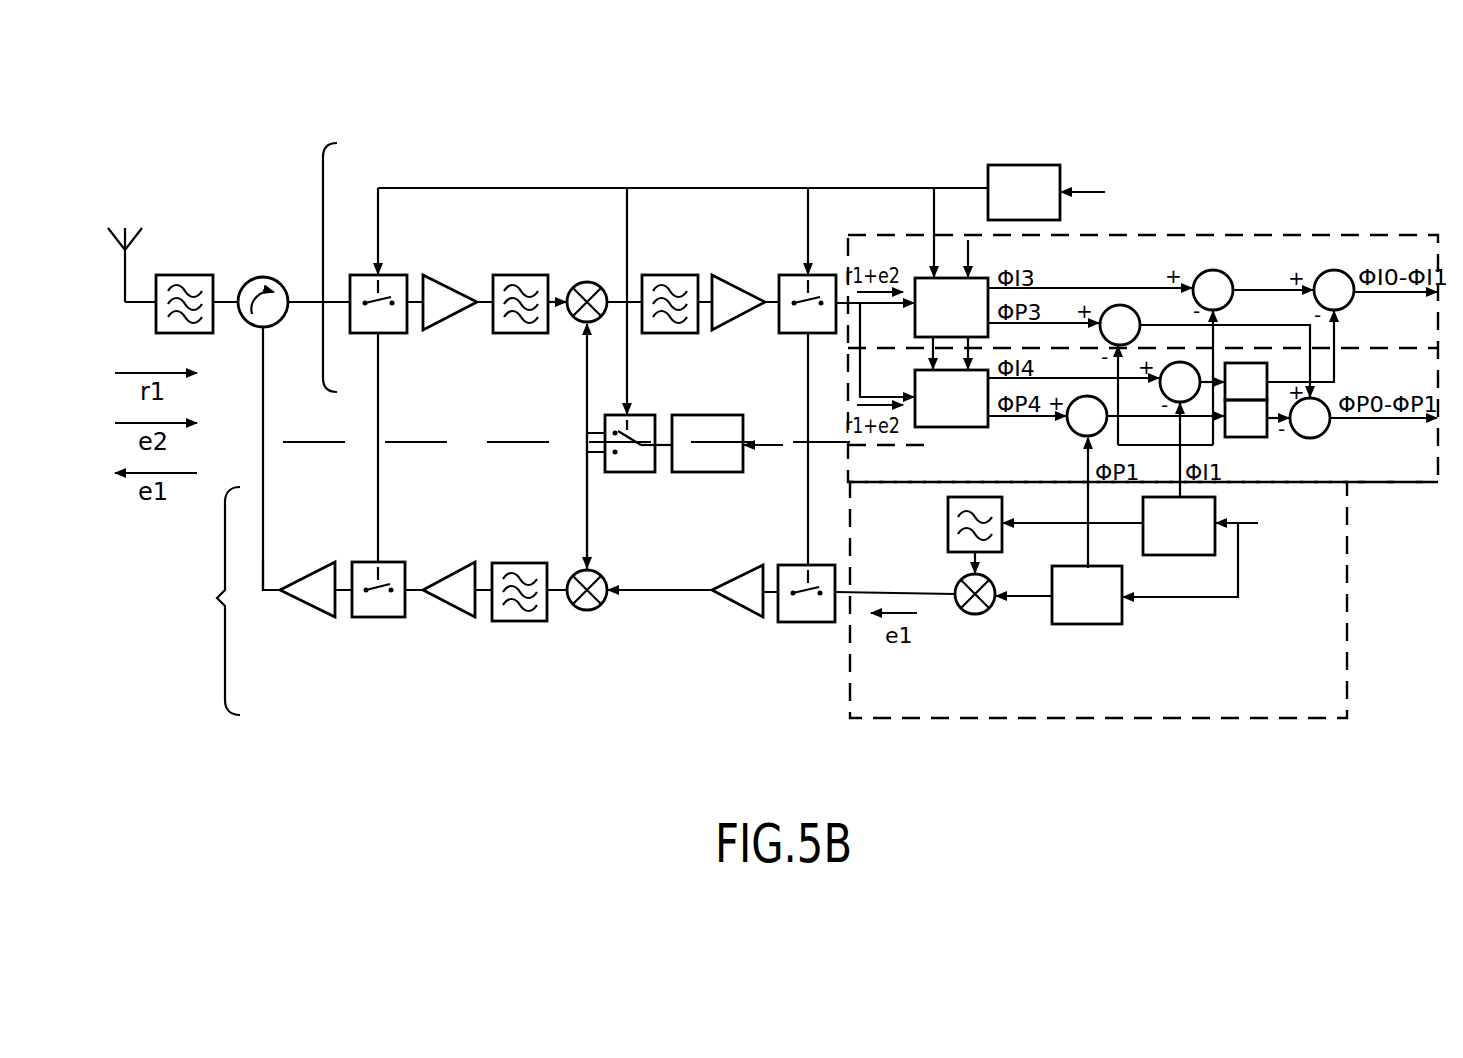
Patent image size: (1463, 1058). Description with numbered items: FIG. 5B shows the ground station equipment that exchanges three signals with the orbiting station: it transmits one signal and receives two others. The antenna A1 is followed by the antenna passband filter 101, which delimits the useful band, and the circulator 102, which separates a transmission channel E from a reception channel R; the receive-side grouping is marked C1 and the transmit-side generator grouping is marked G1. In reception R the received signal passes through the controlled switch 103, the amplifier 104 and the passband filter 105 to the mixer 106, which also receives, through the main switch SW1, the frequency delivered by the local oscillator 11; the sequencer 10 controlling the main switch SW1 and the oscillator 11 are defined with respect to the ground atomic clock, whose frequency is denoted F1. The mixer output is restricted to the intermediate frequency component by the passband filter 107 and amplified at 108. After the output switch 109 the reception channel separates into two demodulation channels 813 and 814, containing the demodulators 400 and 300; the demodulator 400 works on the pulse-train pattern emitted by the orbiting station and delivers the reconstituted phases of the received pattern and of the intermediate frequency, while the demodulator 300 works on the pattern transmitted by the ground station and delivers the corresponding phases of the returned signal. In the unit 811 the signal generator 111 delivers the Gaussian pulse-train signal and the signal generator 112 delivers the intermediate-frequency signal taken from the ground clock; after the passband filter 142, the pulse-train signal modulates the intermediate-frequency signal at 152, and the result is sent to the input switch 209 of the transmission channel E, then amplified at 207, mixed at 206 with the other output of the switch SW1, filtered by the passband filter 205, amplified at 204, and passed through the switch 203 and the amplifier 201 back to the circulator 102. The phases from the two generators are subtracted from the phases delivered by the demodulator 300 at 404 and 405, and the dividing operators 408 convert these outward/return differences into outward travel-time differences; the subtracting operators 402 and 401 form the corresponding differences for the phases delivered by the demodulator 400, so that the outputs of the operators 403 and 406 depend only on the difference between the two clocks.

The antenna A1 is at (137, 227).
The antenna passband filter 101 is at (192, 275).
The circulator 102 is at (256, 278).
The receive chain C1 is at (313, 275).
The reception channel R is at (302, 305).
The controlled switch 103 is at (358, 275).
The amplifier 104 is at (447, 275).
The passband filter 105 is at (511, 275).
The mixer 106 is at (584, 281).
The passband filter 107 is at (674, 275).
The amplifier 108 is at (733, 275).
The output switch 109 is at (792, 335).
The transmission/reception sequencer 10 is at (1033, 165).
The frequency of the clock on the ground F1 is at (1008, 342).
The demodulator 400 is at (922, 277).
The demodulator 300 is at (955, 428).
The subtracting operator 401 is at (1117, 303).
The subtracting operator 402 is at (1213, 270).
The operator 403 is at (1334, 270).
The subtracting operator 404 is at (1168, 398).
The subtracting operator 405 is at (1073, 432).
The operator 406 is at (1318, 438).
The dividing operator 408 is at (1250, 438).
The demodulation channel 813 is at (1404, 234).
The demodulation channel 814 is at (1382, 484).
The modulator unit 811 is at (1195, 720).
The passband filter 142 is at (948, 522).
The signal generator 111 is at (1143, 522).
The modulator 152 is at (975, 615).
The signal generator 112 is at (1090, 625).
The main switch SW1 is at (630, 474).
The local oscillator 11 is at (715, 474).
The amplifier 201 is at (312, 572).
The switch 203 is at (375, 619).
The amplifier 204 is at (449, 570).
The passband filter 205 is at (530, 564).
The mixer 206 is at (587, 611).
The amplifier 207 is at (737, 612).
The input switch 209 is at (800, 623).
The generator G1 is at (208, 601).
The transmission channel E is at (263, 591).